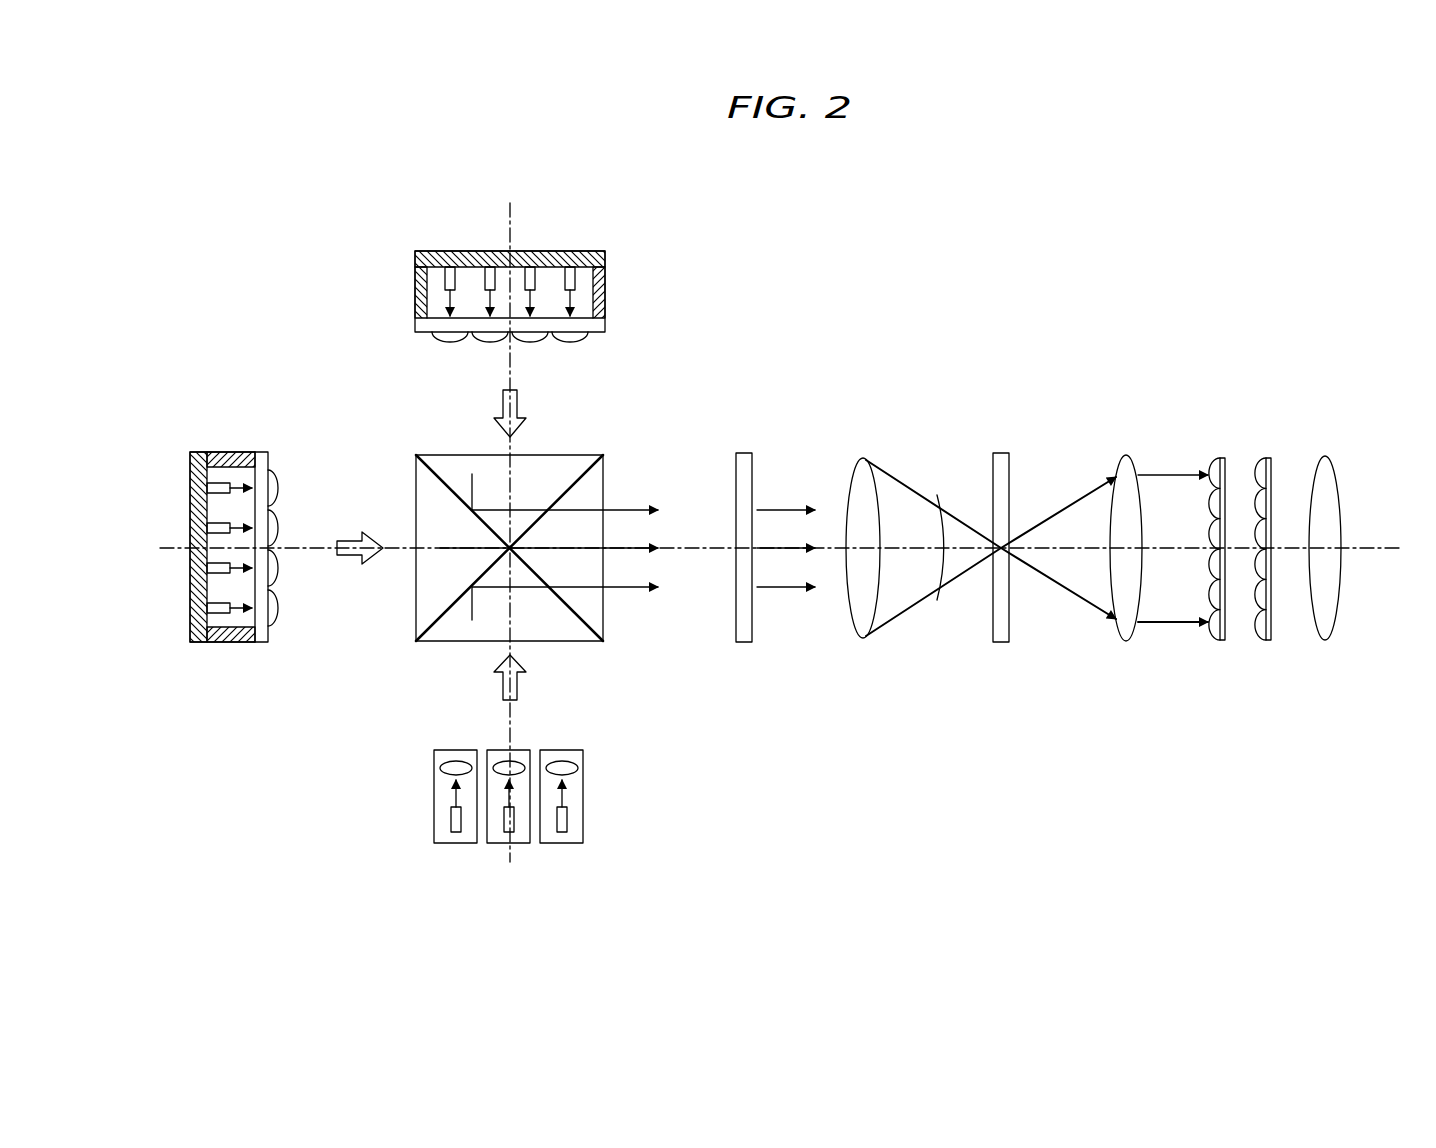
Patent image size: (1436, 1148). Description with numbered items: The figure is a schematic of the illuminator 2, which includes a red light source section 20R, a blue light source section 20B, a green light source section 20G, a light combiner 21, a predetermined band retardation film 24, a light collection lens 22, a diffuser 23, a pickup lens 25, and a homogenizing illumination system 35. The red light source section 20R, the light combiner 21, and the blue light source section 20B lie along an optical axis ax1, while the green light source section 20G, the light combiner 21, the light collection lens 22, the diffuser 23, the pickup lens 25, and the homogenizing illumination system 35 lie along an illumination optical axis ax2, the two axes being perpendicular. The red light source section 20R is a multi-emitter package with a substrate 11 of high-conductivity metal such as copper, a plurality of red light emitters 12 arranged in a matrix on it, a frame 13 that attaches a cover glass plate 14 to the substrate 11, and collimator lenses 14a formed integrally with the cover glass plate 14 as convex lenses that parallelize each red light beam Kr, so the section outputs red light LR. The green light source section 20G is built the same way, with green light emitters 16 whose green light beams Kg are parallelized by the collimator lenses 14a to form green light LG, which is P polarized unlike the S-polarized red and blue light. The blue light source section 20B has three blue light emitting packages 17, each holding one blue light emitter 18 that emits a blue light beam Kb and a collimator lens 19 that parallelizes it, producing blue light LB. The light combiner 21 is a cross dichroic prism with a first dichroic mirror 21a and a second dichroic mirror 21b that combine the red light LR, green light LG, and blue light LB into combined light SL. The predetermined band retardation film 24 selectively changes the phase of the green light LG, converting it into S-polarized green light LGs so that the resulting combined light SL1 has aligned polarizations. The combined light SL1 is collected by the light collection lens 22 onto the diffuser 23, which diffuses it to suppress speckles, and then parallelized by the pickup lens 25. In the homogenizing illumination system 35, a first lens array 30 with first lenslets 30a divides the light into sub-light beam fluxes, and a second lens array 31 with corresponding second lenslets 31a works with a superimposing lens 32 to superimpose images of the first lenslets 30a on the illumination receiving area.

The illuminator 2 is at (943, 222).
The red light source section 20R is at (415, 427).
The green light source section 20G is at (246, 482).
The blue light source section 20B is at (502, 792).
The optical axis ax1 is at (516, 213).
The illumination optical axis ax2 is at (1375, 550).
The substrate 11 is at (603, 262).
The red light emitters 12 is at (577, 282).
The frame 13 is at (418, 291).
The cover glass plate 14 is at (418, 325).
The collimator lenses 14a is at (452, 338).
The green light emitters 16 is at (218, 483).
The blue light emitting packages 17 is at (496, 845).
The blue light emitter 18 is at (455, 832).
The collimator lens 19 is at (440, 768).
The red light beam Kr is at (575, 300).
The green light beam Kg is at (238, 487).
The blue light beam Kb is at (567, 798).
The red light LR is at (503, 403).
The green light LG is at (352, 531).
The blue light LB is at (503, 690).
The S-polarized green light LGs is at (820, 552).
The combined light SL is at (733, 413).
The combined light SL1 is at (868, 703).
The light combiner 21 is at (473, 504).
The first dichroic mirror 21a is at (452, 490).
The second dichroic mirror 21b is at (420, 607).
The light collection lens 22 is at (858, 456).
The diffuser 23 is at (1001, 454).
The predetermined band retardation film 24 is at (742, 642).
The pickup lens 25 is at (1120, 458).
The first lens array 30 is at (1212, 547).
The first lenslets 30a is at (1212, 640).
The second lens array 31 is at (1269, 547).
The second lenslets 31a is at (1262, 640).
The superimposing lens 32 is at (1317, 505).
The homogenizing illumination system 35 is at (1264, 524).